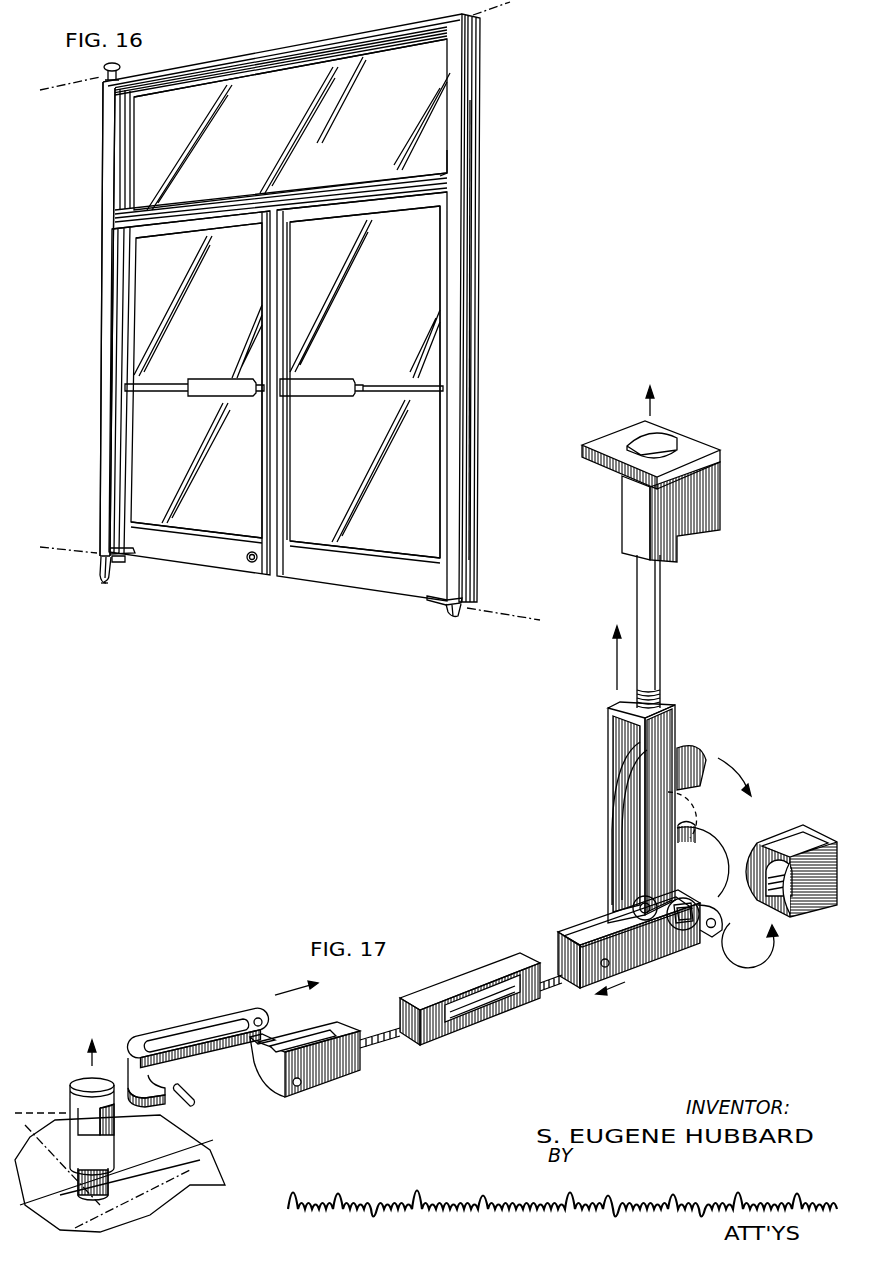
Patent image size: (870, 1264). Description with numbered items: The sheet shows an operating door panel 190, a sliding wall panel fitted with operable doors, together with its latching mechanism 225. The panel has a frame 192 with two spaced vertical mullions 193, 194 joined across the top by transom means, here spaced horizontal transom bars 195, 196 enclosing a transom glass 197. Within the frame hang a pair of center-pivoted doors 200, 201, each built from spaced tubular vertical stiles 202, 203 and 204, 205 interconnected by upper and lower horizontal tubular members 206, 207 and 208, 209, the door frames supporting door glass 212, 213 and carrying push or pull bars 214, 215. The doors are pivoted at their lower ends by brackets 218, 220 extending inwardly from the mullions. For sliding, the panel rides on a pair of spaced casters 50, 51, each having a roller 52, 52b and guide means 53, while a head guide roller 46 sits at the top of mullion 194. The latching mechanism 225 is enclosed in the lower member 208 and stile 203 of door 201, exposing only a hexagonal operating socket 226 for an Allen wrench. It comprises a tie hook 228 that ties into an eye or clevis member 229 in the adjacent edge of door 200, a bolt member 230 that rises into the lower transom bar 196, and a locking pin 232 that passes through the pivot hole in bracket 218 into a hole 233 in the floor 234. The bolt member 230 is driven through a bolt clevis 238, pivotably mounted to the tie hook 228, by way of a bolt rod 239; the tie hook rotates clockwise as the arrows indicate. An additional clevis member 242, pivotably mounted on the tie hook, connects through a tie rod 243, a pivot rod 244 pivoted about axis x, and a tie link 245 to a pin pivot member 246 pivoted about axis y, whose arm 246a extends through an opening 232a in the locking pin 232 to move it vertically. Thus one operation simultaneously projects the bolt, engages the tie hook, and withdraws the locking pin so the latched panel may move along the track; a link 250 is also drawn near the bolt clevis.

In FIG. 16, the head guide roller 46 is at (103, 72).
In FIG. 16, the caster 50 is at (100, 566).
In FIG. 16, the caster 51 is at (446, 608).
In FIG. 16, the roller 52 is at (118, 564).
In FIG. 16, the floor pivot pin 52b is at (462, 617).
In FIG. 16, the guide means 53 is at (106, 584).
In FIG. 16, the operating door panel 190 is at (530, 186).
In FIG. 16, the frame 192 is at (482, 232).
In FIG. 16, the vertical mullion 193 is at (474, 293).
In FIG. 16, the vertical mullion 194 is at (108, 318).
In FIG. 16, the transom bar 195 is at (240, 62).
In FIG. 16, the lower transom bar 196 is at (432, 165).
In FIG. 16, the transom glass 197 is at (440, 66).
In FIG. 16, the center-pivoted door 200 is at (424, 437).
In FIG. 16, the center-pivoted door 201 is at (156, 444).
In FIG. 16, the tubular vertical stile 202 is at (140, 314).
In FIG. 16, the tubular vertical stile 203 is at (262, 335).
In FIG. 16, the tubular vertical stile 204 is at (292, 306).
In FIG. 16, the tubular vertical stile 205 is at (436, 308).
In FIG. 16, the upper horizontal tubular member 206 is at (240, 225).
In FIG. 16, the upper horizontal tubular member 207 is at (406, 207).
In FIG. 16, the lower horizontal tubular member 208 is at (232, 525).
In FIG. 16, the lower horizontal tubular member 209 is at (412, 545).
In FIG. 16, the door glass 212 is at (148, 356).
In FIG. 16, the door glass 213 is at (418, 347).
In FIG. 16, the push or pull bar 214 is at (428, 383).
In FIG. 16, the push or pull bar 215 is at (190, 394).
In FIG. 16, the pivot bracket 218 is at (445, 598).
In FIG. 17, the pivot bracket 218 is at (160, 1192).
In FIG. 16, the bracket 220 is at (118, 540).
In FIG. 17, the latching mechanism 225 is at (582, 1033).
In FIG. 16, the hexagonal operating socket 226 is at (253, 565).
In FIG. 17, the hexagonal operating socket 226 is at (690, 934).
In FIG. 17, the tie hook 228 is at (695, 758).
In FIG. 17, the clevis member 229 is at (774, 830).
In FIG. 17, the bolt member 230 is at (690, 497).
In FIG. 17, the locking pin 232 is at (80, 1080).
In FIG. 17, the opening 232a is at (72, 1106).
In FIG. 17, the hole 233 is at (112, 1200).
In FIG. 17, the floor 234 is at (185, 1168).
In FIG. 17, the bolt clevis 238 is at (612, 752).
In FIG. 17, the bolt rod 239 is at (662, 645).
In FIG. 17, the clevis member 242 is at (626, 966).
In FIG. 17, the tie rod 243 is at (488, 976).
In FIG. 17, the pivot rod 244 is at (270, 1066).
In FIG. 17, the tie link 245 is at (240, 1006).
In FIG. 17, the pin pivot member 246 is at (178, 1032).
In FIG. 17, the arm 246a is at (152, 1110).
In FIG. 17, the link arm 250 is at (618, 843).
In FIG. 17, the axis x is at (283, 1046).
In FIG. 17, the axis y is at (193, 1106).